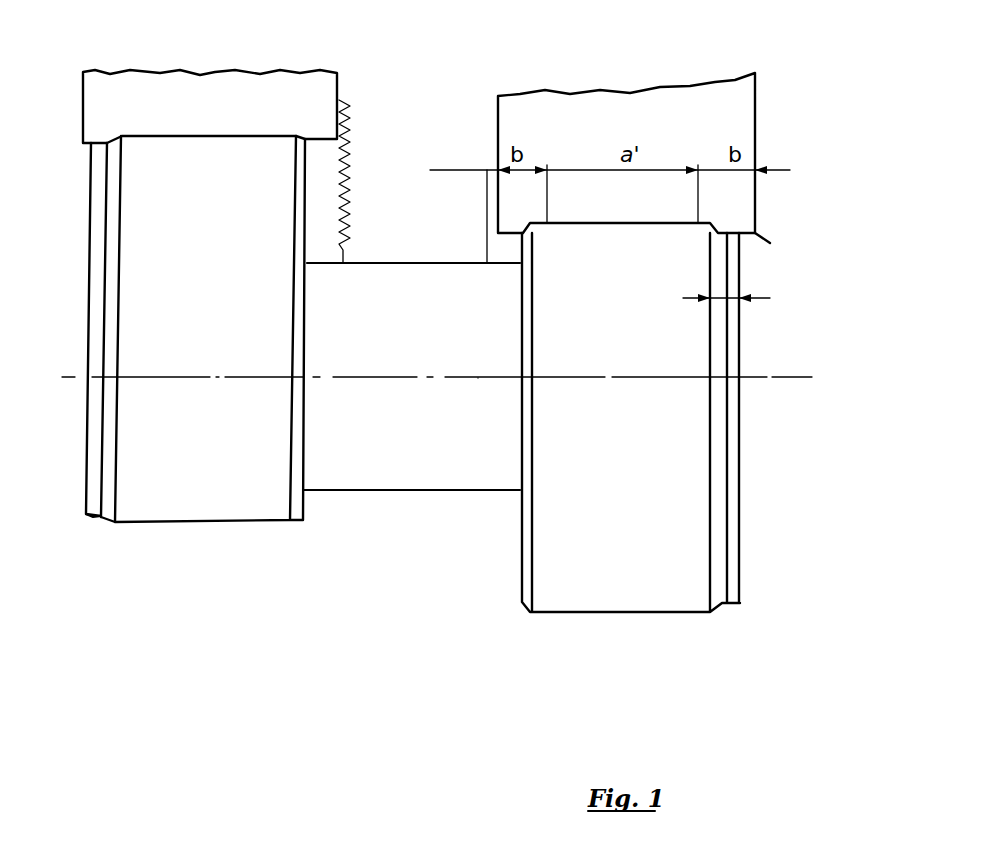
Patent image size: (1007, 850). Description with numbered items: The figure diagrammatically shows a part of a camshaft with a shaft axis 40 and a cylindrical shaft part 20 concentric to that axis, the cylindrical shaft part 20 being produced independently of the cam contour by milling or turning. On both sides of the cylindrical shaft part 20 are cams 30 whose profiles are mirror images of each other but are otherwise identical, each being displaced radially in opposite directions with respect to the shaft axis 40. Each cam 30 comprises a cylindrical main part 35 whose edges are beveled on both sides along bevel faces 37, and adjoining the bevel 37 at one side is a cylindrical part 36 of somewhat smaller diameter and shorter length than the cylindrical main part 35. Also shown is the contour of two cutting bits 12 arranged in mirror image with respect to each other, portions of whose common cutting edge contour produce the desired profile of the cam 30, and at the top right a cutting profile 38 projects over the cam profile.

The cutting bit 12 is at (97, 113).
The cylindrical shaft part 20 is at (390, 460).
The cam 30 is at (616, 588).
The cylindrical main part 35 is at (193, 525).
The cylindrical part 36 is at (92, 517).
The bevel face 37 is at (100, 518).
The cutting profile 38 is at (586, 238).
The shaft axis 40 is at (476, 378).